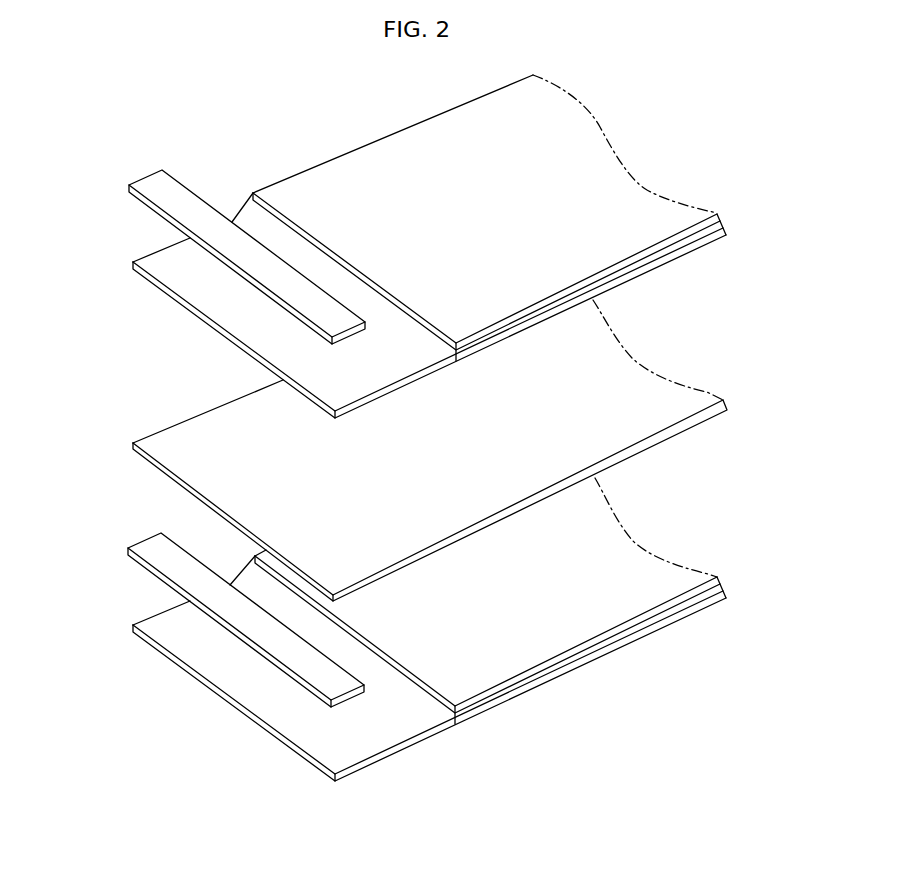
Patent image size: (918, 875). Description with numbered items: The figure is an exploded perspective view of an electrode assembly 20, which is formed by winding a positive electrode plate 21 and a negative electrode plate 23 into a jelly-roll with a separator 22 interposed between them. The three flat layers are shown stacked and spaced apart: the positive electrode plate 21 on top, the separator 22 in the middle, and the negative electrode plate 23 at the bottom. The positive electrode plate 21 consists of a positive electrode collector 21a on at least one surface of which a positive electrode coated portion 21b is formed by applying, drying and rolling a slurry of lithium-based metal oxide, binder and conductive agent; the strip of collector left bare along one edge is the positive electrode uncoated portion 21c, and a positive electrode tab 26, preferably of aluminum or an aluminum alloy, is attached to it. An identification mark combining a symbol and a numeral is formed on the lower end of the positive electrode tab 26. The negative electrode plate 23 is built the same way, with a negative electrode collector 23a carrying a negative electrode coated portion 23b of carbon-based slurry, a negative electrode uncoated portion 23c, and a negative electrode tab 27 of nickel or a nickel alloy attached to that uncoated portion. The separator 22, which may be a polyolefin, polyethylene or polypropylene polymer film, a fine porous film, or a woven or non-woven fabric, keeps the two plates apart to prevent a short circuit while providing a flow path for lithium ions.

The electrode assembly 20 is at (752, 160).
The positive electrode plate 21 is at (369, 246).
The positive electrode collector 21a is at (183, 307).
The positive electrode coated portion 21b is at (317, 178).
The positive electrode uncoated portion 21c is at (248, 222).
The separator 22 is at (108, 442).
The negative electrode plate 23 is at (383, 645).
The negative electrode collector 23a is at (200, 676).
The negative electrode coated portion 23b is at (522, 692).
The negative electrode uncoated portion 23c is at (397, 752).
The positive electrode tab 26 is at (150, 184).
The negative electrode tab 27 is at (162, 568).